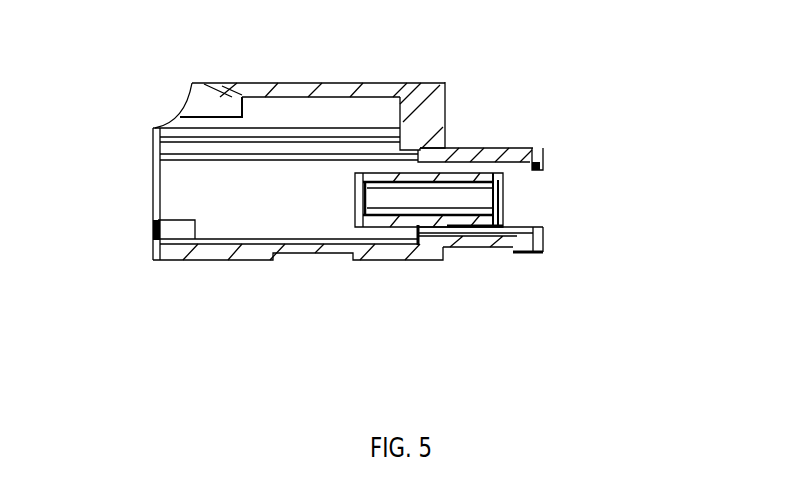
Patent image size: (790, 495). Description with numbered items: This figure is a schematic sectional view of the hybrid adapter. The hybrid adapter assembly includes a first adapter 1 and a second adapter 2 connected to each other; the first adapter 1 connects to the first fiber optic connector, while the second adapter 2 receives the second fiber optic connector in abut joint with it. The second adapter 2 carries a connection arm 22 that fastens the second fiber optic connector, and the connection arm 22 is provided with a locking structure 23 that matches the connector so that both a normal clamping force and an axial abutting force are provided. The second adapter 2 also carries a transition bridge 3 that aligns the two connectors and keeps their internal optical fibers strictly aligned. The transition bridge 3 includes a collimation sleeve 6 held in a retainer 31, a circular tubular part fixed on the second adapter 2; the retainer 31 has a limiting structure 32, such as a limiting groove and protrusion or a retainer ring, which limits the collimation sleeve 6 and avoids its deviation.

The first adapter 1 is at (222, 107).
The second adapter 2 is at (453, 172).
The connection arm 22 is at (493, 160).
The locking structure 23 is at (543, 148).
The transition bridge 3 is at (470, 172).
The limiting structure 32 is at (505, 200).
The retainer 31 is at (535, 228).
The collimation sleeve 6 is at (500, 242).